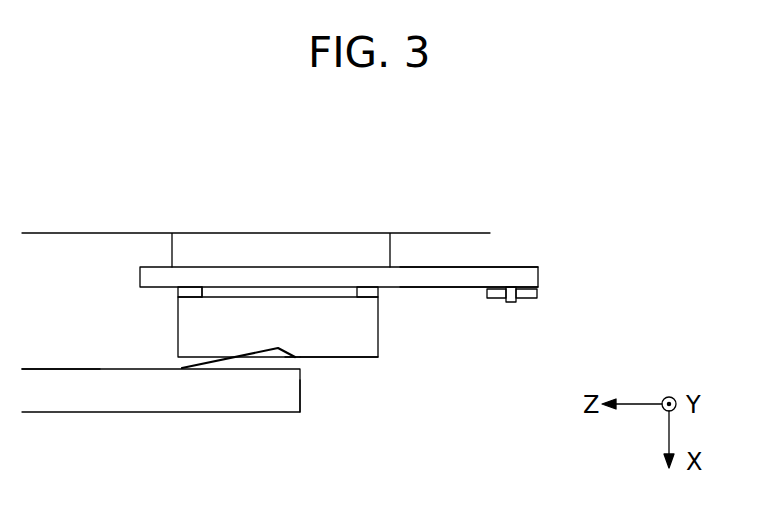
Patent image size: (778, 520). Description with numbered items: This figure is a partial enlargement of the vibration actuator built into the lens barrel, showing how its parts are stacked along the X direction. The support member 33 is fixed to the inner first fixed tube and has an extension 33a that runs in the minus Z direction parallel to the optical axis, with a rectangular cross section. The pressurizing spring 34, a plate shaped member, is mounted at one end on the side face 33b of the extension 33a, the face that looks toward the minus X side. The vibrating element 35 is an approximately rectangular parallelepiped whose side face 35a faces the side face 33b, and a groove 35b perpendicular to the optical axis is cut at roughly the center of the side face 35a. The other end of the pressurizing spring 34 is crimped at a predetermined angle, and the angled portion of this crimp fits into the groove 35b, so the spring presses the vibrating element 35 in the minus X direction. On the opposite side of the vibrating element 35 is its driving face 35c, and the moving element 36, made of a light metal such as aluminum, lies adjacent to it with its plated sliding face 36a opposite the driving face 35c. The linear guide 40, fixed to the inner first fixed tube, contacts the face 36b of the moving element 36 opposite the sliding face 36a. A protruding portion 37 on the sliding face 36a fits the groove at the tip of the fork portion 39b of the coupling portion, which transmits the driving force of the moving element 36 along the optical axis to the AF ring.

The support member 33 is at (124, 430).
The extension 33a is at (263, 402).
The side face 33b is at (57, 368).
The pressurizing spring 34 is at (279, 351).
The vibrating element 35 is at (368, 328).
The side face 35a is at (368, 358).
The groove 35b is at (289, 358).
The driving face 35c is at (230, 297).
The moving element 36 is at (502, 275).
The sliding face 36a is at (477, 287).
The face 36b is at (488, 267).
The protruding portion 37 is at (513, 299).
The fork portion 39b is at (537, 294).
The linear guide 40 is at (350, 247).